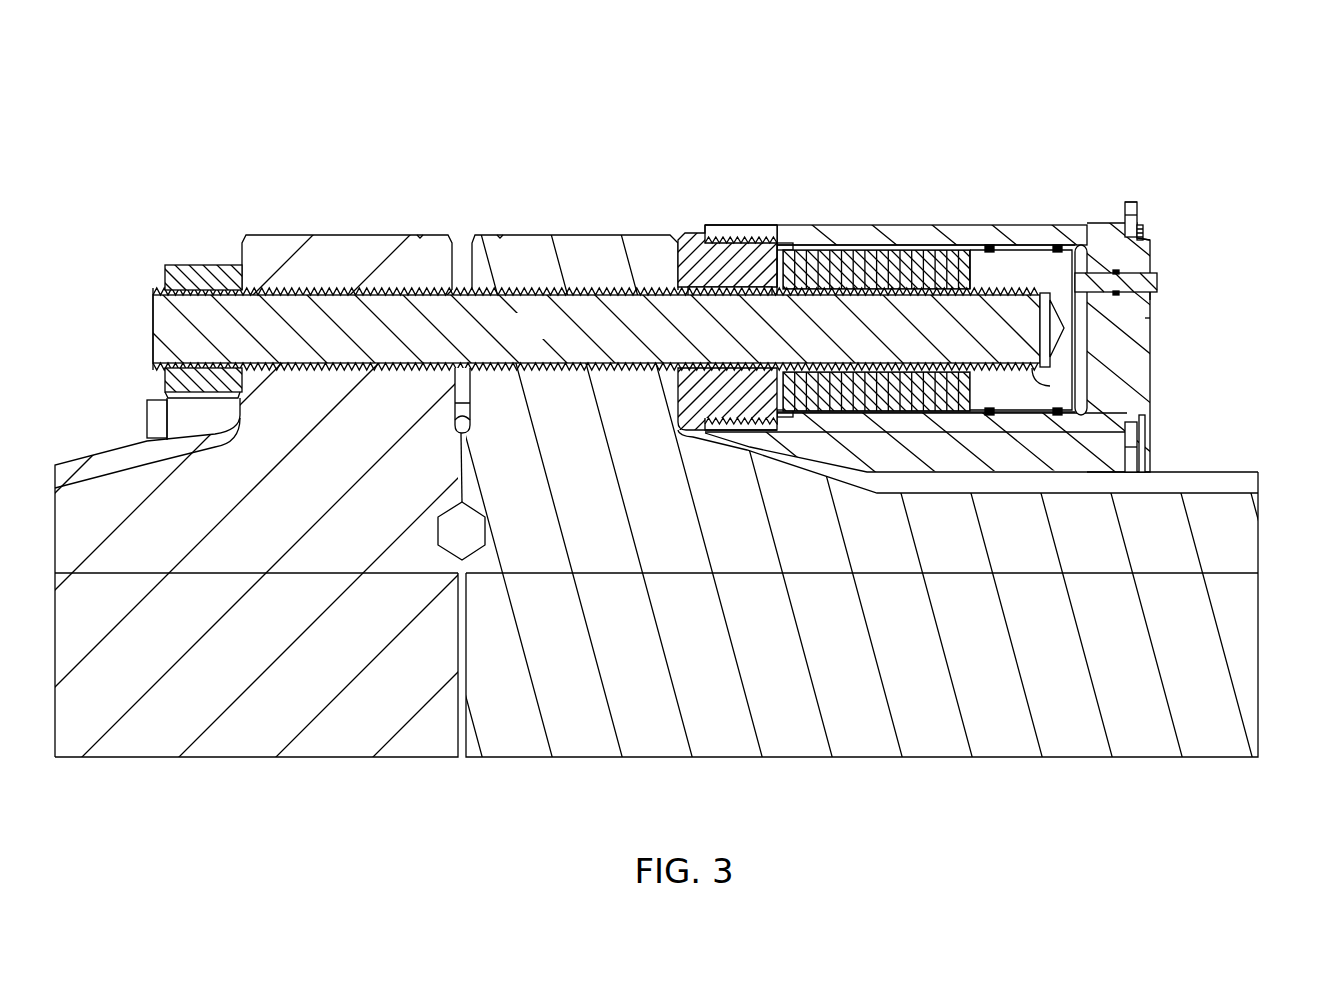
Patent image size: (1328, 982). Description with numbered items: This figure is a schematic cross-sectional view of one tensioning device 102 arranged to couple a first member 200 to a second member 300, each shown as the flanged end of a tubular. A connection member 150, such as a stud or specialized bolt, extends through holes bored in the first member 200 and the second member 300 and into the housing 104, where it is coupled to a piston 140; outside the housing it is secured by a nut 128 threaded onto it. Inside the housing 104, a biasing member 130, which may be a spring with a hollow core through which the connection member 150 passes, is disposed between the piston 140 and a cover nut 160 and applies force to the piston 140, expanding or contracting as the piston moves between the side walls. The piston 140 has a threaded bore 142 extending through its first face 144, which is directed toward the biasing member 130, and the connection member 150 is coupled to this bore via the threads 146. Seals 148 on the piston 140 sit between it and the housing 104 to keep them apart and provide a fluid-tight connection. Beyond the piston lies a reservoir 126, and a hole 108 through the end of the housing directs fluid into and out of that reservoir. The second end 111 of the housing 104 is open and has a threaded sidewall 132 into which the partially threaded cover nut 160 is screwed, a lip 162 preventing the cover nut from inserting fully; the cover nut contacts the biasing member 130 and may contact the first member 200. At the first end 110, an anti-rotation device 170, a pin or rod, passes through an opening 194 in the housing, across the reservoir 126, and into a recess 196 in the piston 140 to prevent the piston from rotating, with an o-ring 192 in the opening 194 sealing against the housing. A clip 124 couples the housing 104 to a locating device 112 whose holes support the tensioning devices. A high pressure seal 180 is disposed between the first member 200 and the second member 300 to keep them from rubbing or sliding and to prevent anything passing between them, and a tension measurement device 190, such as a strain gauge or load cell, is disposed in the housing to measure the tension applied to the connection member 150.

The tensioning device 102 is at (886, 198).
The housing 104 is at (817, 232).
The hole 108 is at (1130, 328).
The first end 110 is at (1153, 240).
The second end 111 is at (709, 222).
The locating device 112 is at (1140, 218).
The clip 124 is at (1145, 227).
The reservoir 126 is at (1082, 370).
The nut 128 is at (190, 275).
The biasing member 130 is at (920, 260).
The threaded sidewall 132 is at (752, 296).
The piston 140 is at (1028, 260).
The threaded bore 142 is at (1058, 318).
The first face 144 is at (948, 267).
The threads 146 is at (1050, 386).
The seals 148 is at (1060, 246).
The connection member 150 is at (546, 335).
The cover nut 160 is at (738, 262).
The lip 162 is at (697, 231).
The anti-rotation device 170 is at (1150, 283).
The high pressure seal 180 is at (457, 527).
The tension measurement device 190 is at (777, 243).
The o-ring 192 is at (1122, 272).
The opening 194 is at (1165, 298).
The recess 196 is at (1150, 318).
The first member 200 is at (535, 252).
The second member 300 is at (327, 262).